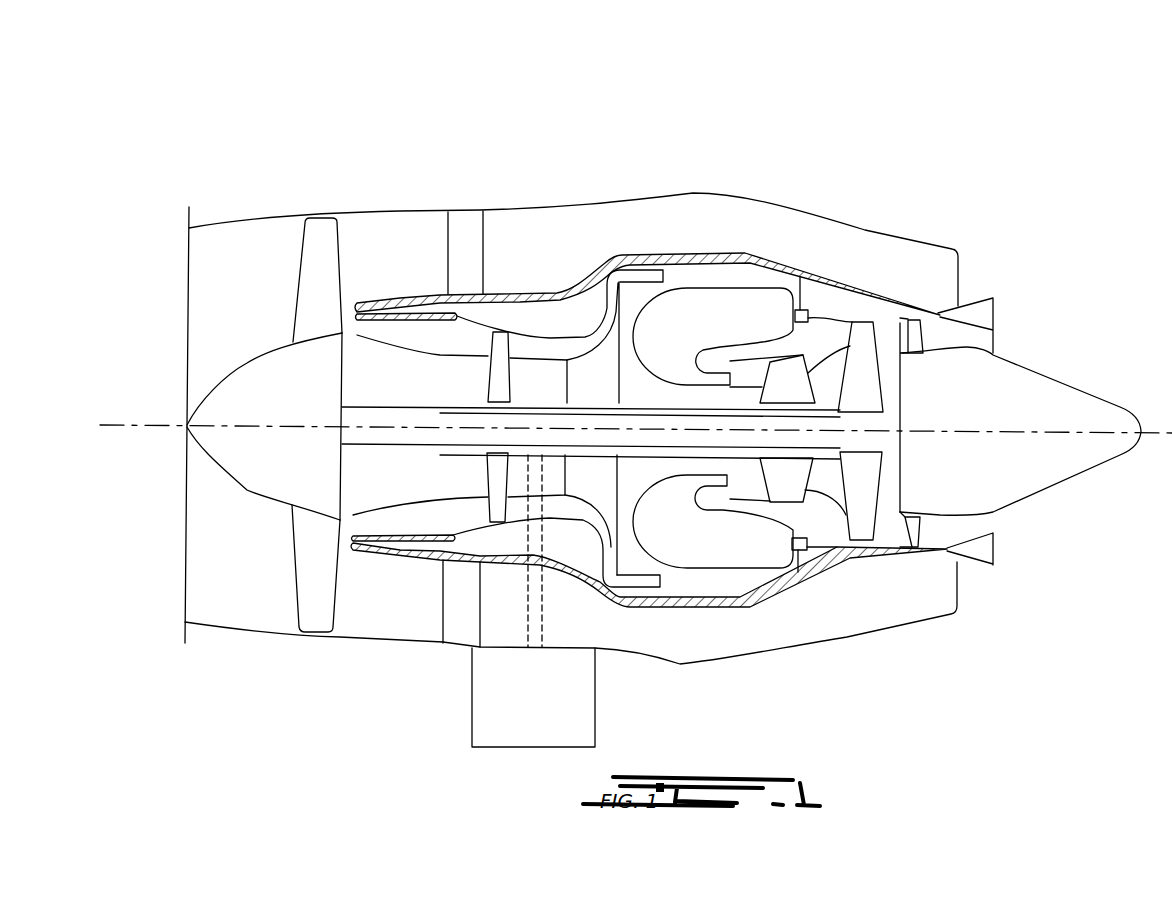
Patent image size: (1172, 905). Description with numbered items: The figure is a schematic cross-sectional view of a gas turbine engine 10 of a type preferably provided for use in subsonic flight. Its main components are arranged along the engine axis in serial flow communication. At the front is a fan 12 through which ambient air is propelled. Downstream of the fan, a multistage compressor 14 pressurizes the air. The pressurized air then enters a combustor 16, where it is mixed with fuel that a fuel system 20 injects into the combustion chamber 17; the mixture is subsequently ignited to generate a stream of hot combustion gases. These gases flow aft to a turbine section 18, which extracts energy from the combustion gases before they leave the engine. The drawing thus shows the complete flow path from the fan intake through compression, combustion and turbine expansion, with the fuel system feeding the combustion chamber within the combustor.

The gas turbine engine 10 is at (847, 155).
The fan 12 is at (310, 557).
The multistage compressor 14 is at (551, 350).
The combustor 16 is at (710, 287).
The combustion chamber 17 is at (737, 313).
The turbine section 18 is at (825, 490).
The fuel system 20 is at (817, 300).